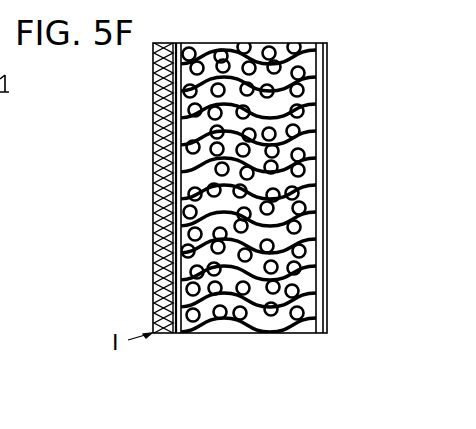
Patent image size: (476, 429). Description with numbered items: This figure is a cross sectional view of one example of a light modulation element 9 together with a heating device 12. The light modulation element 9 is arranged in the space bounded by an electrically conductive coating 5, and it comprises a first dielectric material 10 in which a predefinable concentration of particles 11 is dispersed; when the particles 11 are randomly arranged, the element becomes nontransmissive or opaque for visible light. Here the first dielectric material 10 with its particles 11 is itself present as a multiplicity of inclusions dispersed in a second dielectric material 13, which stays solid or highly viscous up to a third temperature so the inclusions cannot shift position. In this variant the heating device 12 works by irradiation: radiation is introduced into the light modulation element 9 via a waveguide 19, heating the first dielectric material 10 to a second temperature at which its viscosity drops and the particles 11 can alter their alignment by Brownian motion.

The electrically conductive coating 5 is at (322, 152).
The light modulation element 9 is at (282, 336).
The first dielectric material 10 is at (313, 187).
The particles 11 is at (320, 121).
The heating device 12 is at (96, 188).
The second dielectric material 13 is at (153, 97).
The waveguide 19 is at (153, 300).